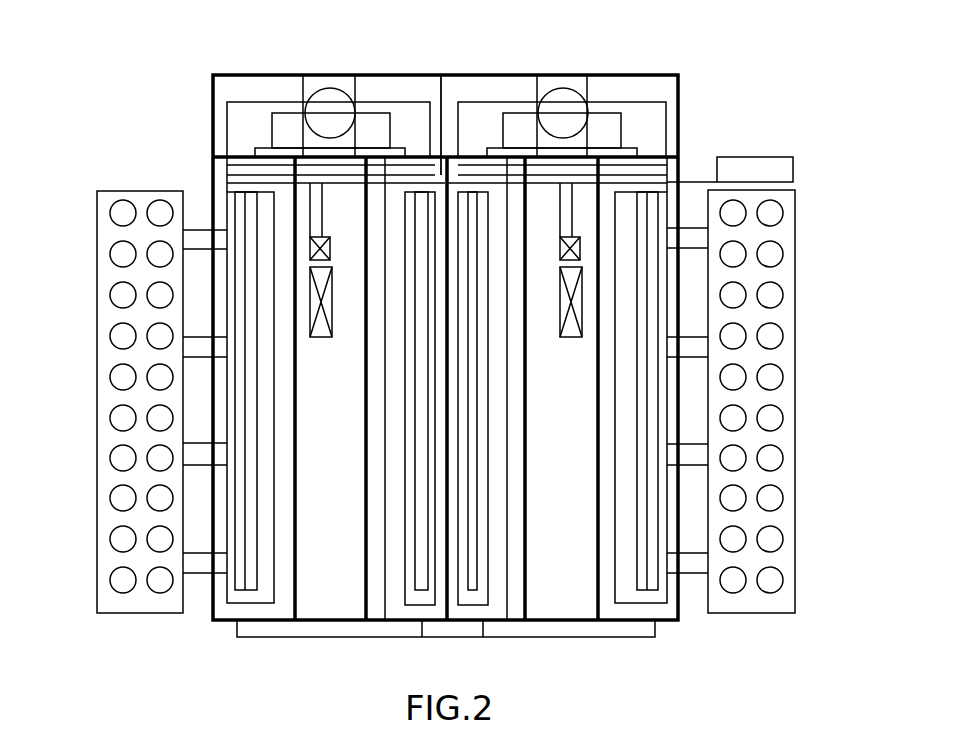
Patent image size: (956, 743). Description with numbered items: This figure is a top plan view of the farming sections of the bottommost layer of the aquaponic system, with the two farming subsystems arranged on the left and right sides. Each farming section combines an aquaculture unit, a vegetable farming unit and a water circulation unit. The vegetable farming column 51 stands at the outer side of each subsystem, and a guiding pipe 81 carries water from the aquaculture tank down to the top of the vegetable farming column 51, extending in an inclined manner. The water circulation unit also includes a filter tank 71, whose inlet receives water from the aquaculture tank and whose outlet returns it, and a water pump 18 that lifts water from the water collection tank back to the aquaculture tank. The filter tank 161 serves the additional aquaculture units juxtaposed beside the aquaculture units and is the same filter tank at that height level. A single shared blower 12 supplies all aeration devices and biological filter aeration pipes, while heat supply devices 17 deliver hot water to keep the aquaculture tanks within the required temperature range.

The filter tank 71 is at (275, 92).
The filter tank 161 is at (636, 97).
The blower 12 is at (310, 245).
The heat supply device 17 is at (313, 303).
The guiding pipe 81 is at (183, 228).
The vegetable farming column 51 is at (115, 277).
The water pump 18 is at (783, 170).